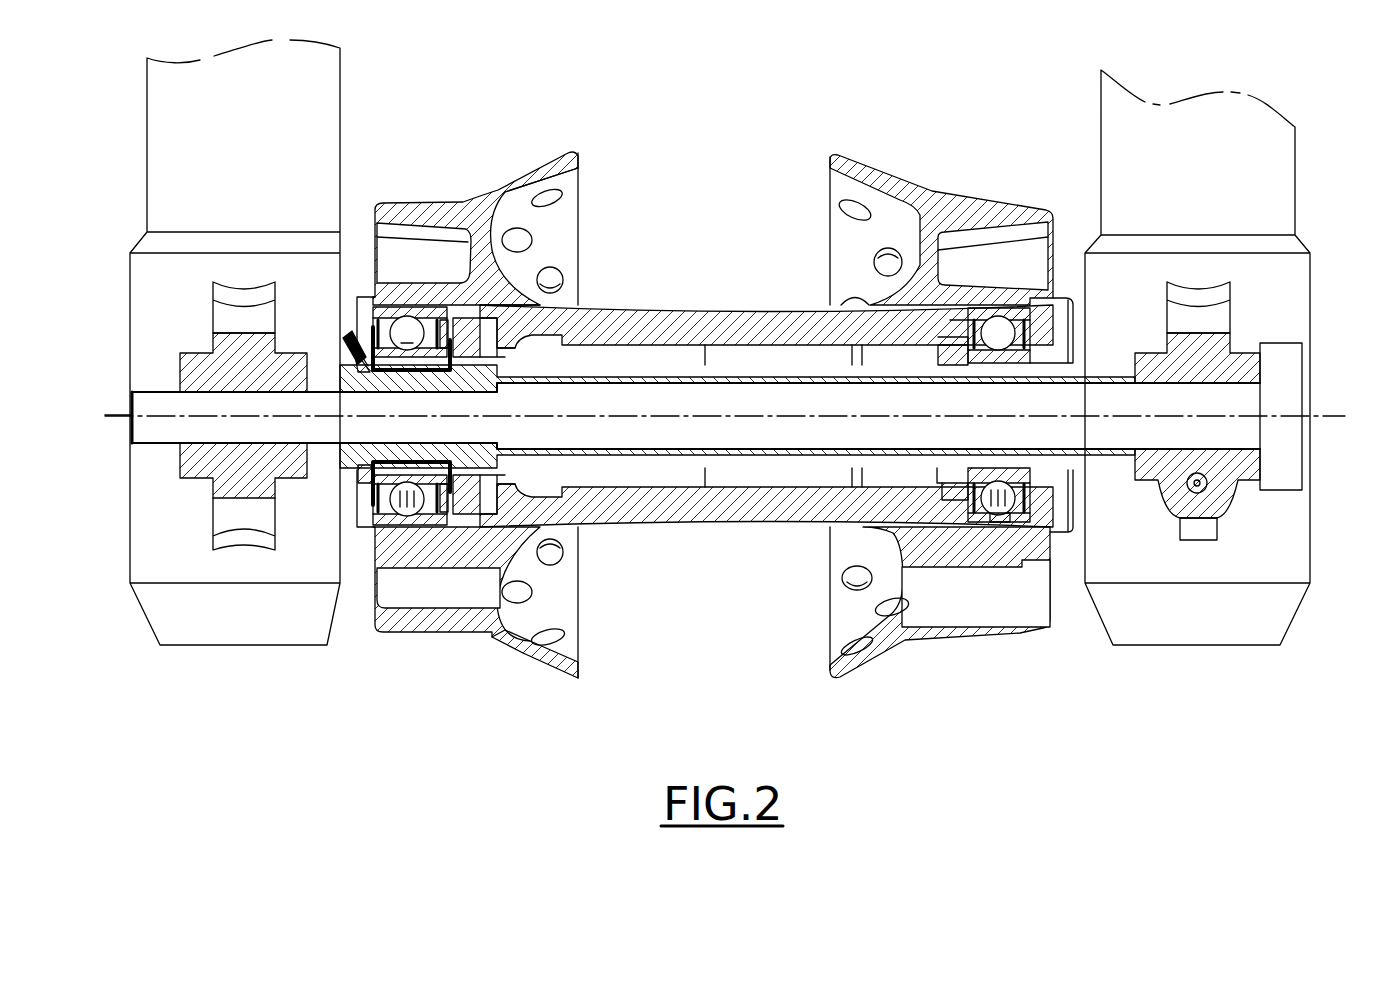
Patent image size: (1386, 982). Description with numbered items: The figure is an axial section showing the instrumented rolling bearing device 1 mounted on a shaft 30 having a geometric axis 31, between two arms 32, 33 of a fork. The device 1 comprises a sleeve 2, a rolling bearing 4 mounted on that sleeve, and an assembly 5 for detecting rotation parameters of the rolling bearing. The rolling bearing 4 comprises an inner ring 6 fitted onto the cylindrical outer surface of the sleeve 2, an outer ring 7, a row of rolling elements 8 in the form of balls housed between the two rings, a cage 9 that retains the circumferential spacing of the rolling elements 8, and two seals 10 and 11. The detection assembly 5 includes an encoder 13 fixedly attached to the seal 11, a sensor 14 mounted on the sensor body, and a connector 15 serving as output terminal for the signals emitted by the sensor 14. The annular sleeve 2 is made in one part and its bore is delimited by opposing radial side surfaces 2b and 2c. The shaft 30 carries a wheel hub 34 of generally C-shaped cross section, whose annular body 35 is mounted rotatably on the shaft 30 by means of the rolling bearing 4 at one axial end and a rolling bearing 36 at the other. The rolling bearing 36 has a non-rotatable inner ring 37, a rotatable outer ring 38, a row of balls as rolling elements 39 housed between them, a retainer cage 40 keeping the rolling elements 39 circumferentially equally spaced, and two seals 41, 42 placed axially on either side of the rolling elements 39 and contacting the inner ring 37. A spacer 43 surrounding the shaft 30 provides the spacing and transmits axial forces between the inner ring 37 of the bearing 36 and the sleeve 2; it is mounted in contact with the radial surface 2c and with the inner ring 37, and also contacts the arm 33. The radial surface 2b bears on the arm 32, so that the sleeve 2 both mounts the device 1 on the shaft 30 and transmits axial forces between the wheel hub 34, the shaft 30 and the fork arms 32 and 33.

The instrumented rolling bearing device 1 is at (421, 298).
The sleeve 2 is at (676, 481).
The radial side surface 2b is at (285, 468).
The radial side surface 2c is at (505, 530).
The rolling bearing 4 is at (372, 595).
The assembly for detecting rotation parameters 5 is at (492, 330).
The inner ring 6 is at (440, 318).
The outer ring 7 is at (421, 224).
The rolling elements 8 is at (407, 333).
The cage 9 is at (430, 600).
The seal 10 is at (350, 312).
The seal 11 is at (430, 500).
The encoder 13 is at (470, 316).
The sensor 14 is at (492, 304).
The connector 15 is at (355, 493).
The shaft 30 is at (228, 430).
The geometric axis 31 is at (120, 414).
The arm 32 is at (147, 148).
The arm 33 is at (1295, 178).
The wheel hub 34 is at (875, 163).
The annular body 35 is at (698, 316).
The rolling bearing 36 is at (1045, 514).
The inner ring 37 is at (1071, 478).
The outer ring 38 is at (1003, 520).
The rolling elements 39 is at (999, 335).
The retainer cage 40 is at (986, 502).
The seal 41 is at (1040, 330).
The seal 42 is at (970, 322).
The spacer 43 is at (742, 362).